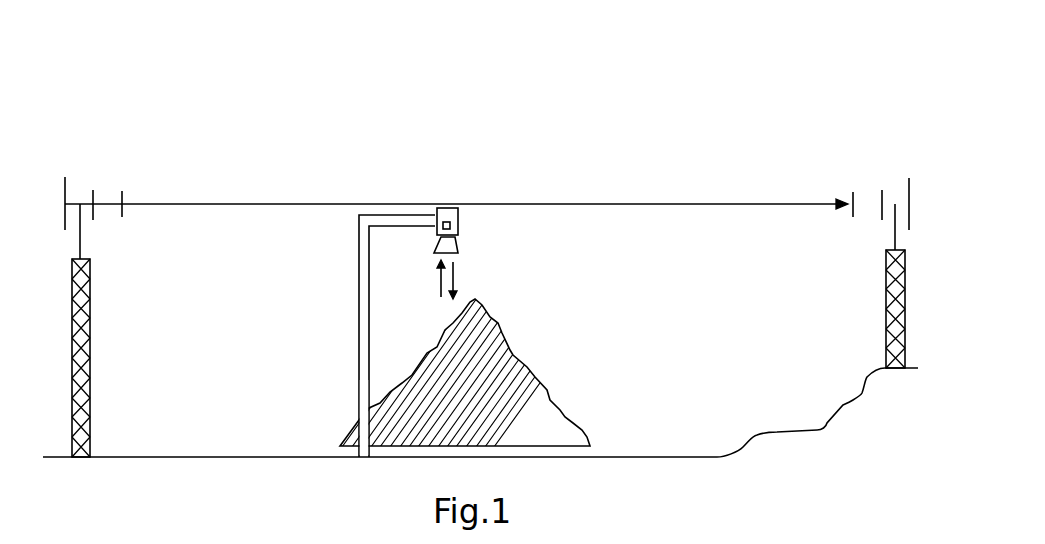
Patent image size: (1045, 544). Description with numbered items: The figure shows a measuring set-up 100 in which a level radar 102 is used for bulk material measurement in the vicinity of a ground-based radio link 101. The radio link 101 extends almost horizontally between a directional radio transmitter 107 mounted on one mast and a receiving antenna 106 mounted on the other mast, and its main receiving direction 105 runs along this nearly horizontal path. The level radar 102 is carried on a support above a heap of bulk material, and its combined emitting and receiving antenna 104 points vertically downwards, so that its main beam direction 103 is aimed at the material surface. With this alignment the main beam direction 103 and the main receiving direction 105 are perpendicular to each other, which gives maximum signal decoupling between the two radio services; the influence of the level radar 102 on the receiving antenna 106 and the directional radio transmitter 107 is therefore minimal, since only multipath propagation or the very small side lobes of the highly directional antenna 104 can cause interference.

The monitoring system 100 is at (667, 80).
The radio link 101 is at (171, 144).
The level radar 102 is at (468, 217).
The main beam direction 103 is at (474, 276).
The combined emitting and receiving antenna 104 is at (470, 243).
The main receiving direction 105 is at (840, 185).
The receiving antenna 106 is at (895, 175).
The directional radio transmitter 107 is at (87, 172).